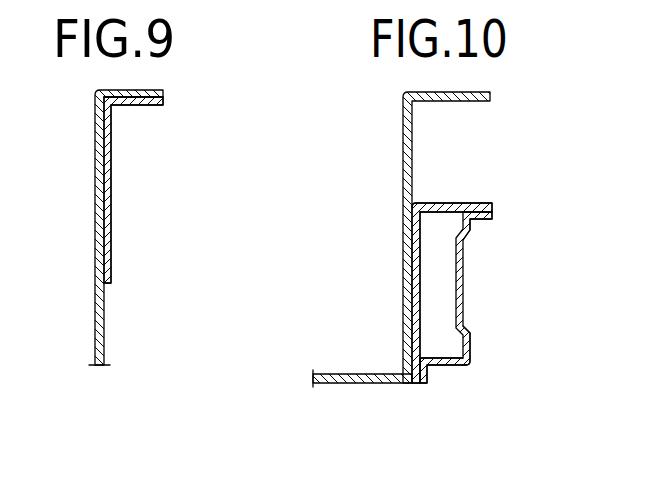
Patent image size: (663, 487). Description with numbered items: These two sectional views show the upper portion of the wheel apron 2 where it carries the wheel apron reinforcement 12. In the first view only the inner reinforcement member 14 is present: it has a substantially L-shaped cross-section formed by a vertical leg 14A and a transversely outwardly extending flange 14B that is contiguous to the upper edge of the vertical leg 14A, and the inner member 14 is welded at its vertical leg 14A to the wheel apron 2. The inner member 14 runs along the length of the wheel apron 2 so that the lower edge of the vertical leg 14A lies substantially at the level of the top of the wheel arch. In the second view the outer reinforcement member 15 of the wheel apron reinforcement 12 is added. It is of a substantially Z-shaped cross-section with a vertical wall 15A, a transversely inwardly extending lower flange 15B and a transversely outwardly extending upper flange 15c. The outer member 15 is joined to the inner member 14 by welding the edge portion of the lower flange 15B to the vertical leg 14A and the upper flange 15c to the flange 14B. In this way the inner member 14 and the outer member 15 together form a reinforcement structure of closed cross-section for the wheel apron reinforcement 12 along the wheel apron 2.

In FIG. 9, the wheel apron 2 is at (100, 208).
In FIG. 10, the wheel apron 2 is at (405, 182).
In FIG. 10, the wheel apron reinforcement 12 is at (475, 368).
In FIG. 9, the inner reinforcement member 14 is at (111, 215).
In FIG. 10, the inner reinforcement member 14 is at (427, 203).
In FIG. 9, the vertical leg 14A is at (113, 252).
In FIG. 10, the vertical leg 14A is at (420, 268).
In FIG. 9, the transversely outwardly extending flange 14B is at (140, 107).
In FIG. 10, the transversely outwardly extending flange 14B is at (470, 208).
In FIG. 10, the outer reinforcement member 15 is at (463, 301).
In FIG. 10, the vertical wall 15A is at (466, 316).
In FIG. 10, the lower flange 15B is at (433, 364).
In FIG. 10, the upper flange 15c is at (492, 213).